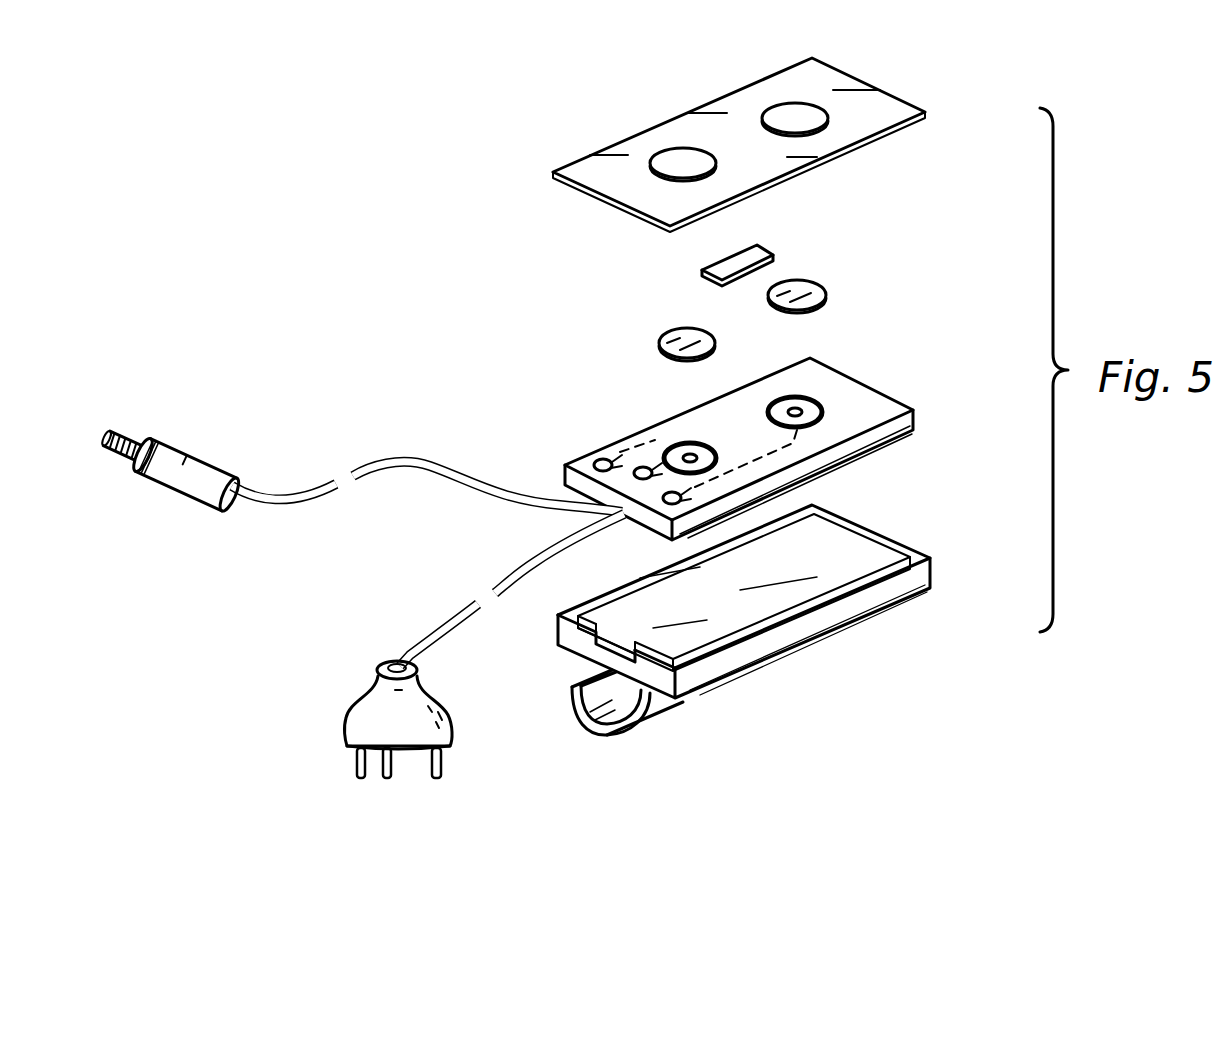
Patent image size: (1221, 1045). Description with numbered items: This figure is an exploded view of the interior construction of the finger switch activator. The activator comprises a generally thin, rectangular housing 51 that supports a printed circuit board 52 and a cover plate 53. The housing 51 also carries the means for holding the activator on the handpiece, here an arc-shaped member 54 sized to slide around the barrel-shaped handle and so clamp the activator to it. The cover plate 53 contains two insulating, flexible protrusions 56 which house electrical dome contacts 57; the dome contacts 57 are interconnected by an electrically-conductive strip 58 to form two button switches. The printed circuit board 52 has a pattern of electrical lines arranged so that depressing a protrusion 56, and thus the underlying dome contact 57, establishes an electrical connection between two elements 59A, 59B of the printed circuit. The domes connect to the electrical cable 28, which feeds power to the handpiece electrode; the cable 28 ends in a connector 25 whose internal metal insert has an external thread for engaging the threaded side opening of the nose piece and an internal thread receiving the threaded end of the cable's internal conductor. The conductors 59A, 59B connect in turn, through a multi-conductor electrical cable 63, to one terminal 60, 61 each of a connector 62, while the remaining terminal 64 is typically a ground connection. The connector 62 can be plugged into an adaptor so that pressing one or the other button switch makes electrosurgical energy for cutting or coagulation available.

The connector 25 is at (190, 487).
The electrical cable 28 is at (400, 459).
The housing 51 is at (930, 562).
The printed circuit board 52 is at (868, 418).
The cover plate 53 is at (951, 158).
The arc-shaped member 54 is at (655, 718).
The flexible protrusions 56 is at (795, 118).
The dome contacts 57 is at (824, 291).
The electrically-conductive strip 58 is at (704, 259).
The printed circuit element 59A is at (822, 405).
The printed circuit element 59B is at (795, 412).
The terminal 60 is at (360, 780).
The terminal 61 is at (387, 780).
The connector 62 is at (360, 718).
The multi-conductor electrical cable 63 is at (416, 626).
The terminal 64 is at (437, 780).